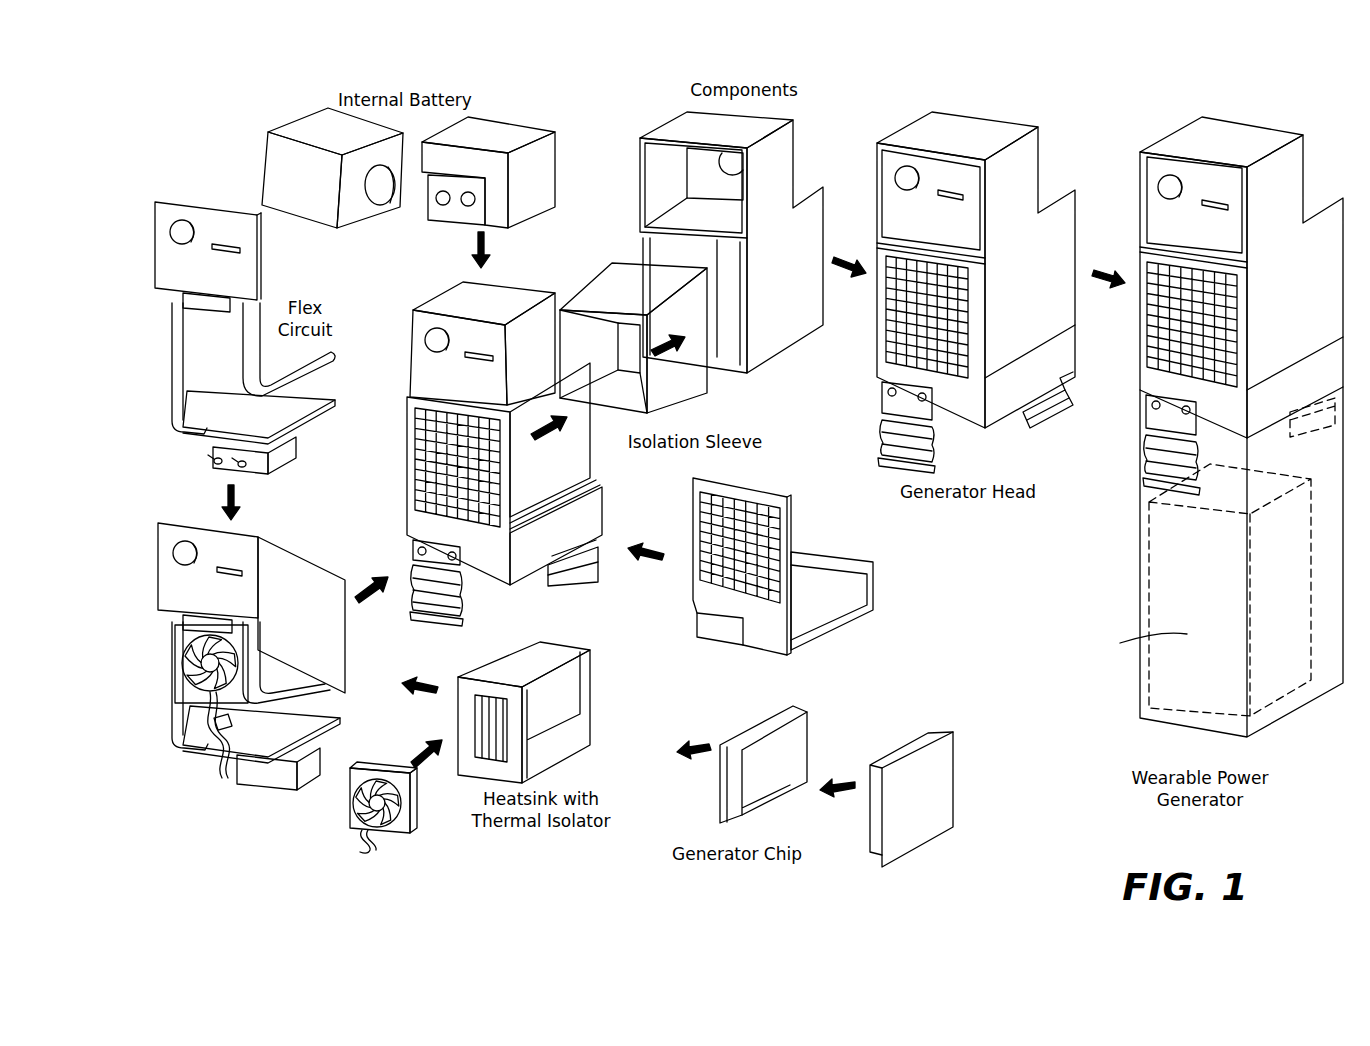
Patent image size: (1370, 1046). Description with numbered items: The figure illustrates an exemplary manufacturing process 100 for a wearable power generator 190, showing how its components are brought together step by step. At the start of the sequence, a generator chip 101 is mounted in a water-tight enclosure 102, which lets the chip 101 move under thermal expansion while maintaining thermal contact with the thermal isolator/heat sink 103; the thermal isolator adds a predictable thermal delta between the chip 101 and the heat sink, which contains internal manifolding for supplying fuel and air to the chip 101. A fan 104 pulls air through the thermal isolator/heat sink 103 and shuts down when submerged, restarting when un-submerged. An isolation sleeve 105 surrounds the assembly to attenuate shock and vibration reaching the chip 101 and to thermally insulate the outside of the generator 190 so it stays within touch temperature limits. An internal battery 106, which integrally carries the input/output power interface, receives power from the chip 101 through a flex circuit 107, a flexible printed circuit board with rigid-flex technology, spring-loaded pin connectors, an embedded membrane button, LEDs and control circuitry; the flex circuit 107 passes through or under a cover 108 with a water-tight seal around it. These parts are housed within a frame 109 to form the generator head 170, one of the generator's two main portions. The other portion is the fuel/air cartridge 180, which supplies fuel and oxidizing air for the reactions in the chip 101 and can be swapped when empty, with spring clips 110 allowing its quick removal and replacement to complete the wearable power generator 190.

The manufacturing process 100 is at (989, 55).
The generator chip 101 is at (754, 777).
The water-tight enclosure 102 is at (901, 814).
The thermal isolator/heat sink 103 is at (539, 669).
The fan 104 is at (350, 820).
The isolation sleeve 105 is at (612, 303).
The internal battery 106 is at (283, 191).
The flex circuit 107 is at (183, 358).
The cover 108 is at (287, 674).
The frame 109 is at (696, 140).
The spring clips 110 is at (898, 444).
The generator head 170 is at (945, 147).
The fuel/air cartridge 180 is at (1326, 670).
The wearable power generator 190 is at (1246, 108).